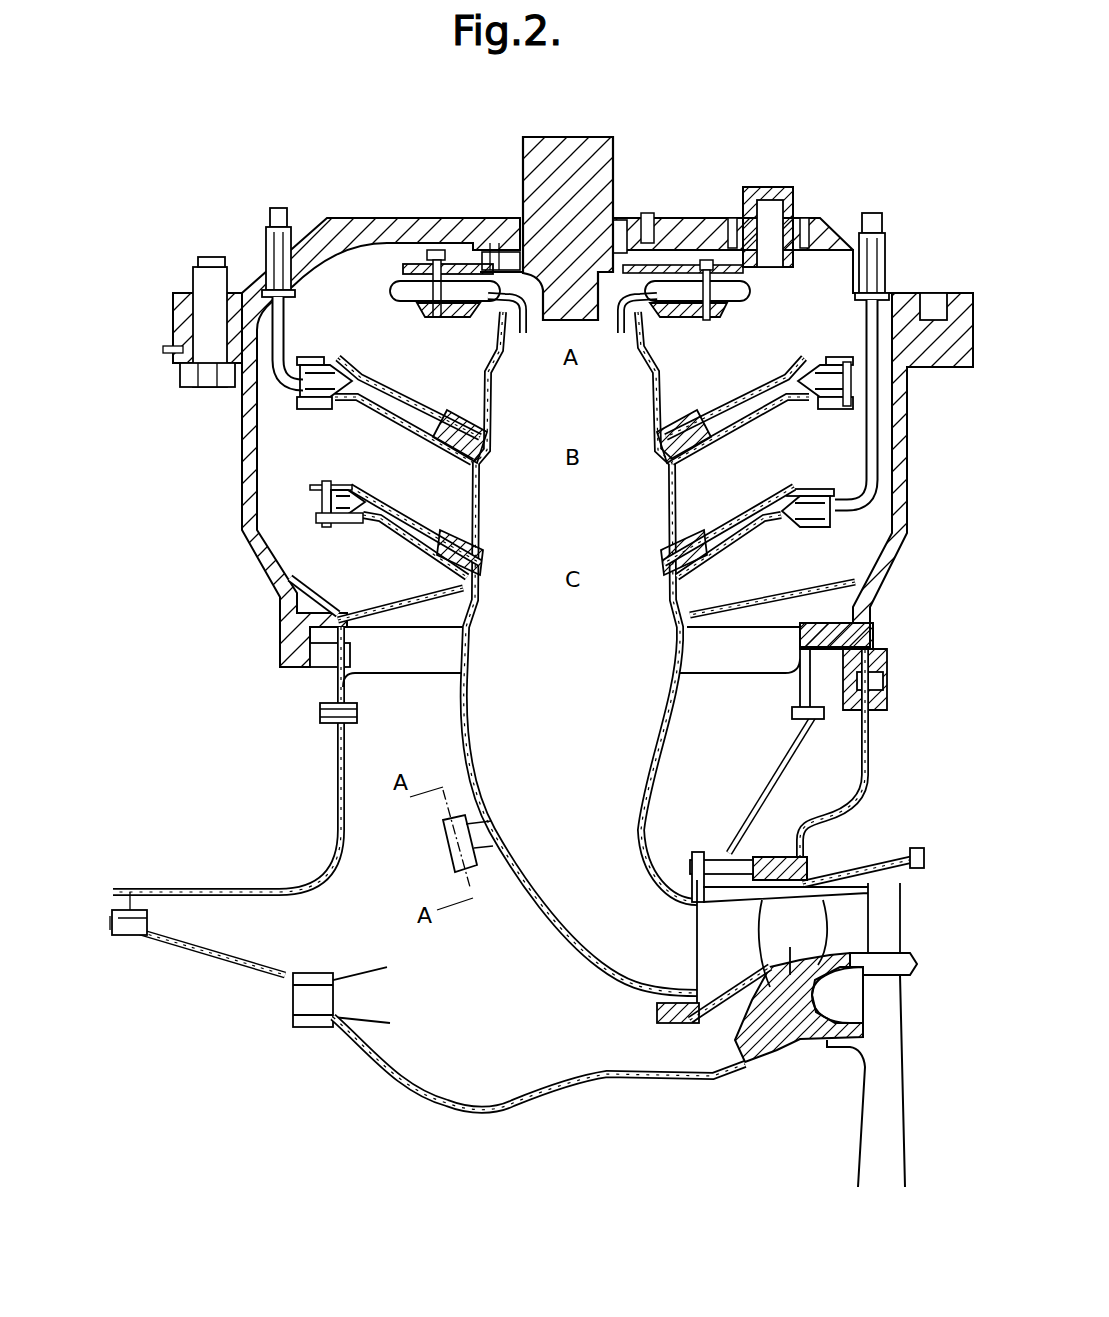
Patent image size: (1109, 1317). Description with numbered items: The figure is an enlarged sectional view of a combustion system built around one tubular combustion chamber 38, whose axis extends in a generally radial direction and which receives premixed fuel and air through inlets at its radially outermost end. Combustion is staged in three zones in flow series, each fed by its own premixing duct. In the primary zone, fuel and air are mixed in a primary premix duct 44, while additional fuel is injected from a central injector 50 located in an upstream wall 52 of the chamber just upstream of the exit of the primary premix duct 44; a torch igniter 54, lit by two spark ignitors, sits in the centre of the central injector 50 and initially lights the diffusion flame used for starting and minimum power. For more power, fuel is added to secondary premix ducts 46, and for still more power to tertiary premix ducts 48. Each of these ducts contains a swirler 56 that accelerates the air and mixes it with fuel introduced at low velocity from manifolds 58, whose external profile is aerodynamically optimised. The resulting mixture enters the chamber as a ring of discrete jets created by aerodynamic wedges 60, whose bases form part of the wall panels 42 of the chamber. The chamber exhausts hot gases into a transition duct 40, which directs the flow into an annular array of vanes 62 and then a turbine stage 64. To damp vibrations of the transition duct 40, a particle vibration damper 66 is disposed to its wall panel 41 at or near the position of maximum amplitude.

The tubular combustion chamber 38 is at (713, 373).
The transition duct 40 is at (523, 953).
The wall panel of the transition duct 41 is at (582, 988).
The wall panels 42 is at (665, 954).
The primary premix duct 44 is at (640, 310).
The secondary premix duct 46 is at (417, 402).
The tertiary premix duct 48 is at (400, 510).
The central injector 50 is at (580, 147).
The upstream wall 52 is at (383, 223).
The torch igniter 54 is at (584, 332).
The swirler 56 is at (310, 430).
The manifold 58 is at (318, 377).
The aerodynamic wedge 60 is at (483, 445).
The annular array of vanes 62 is at (773, 1000).
The turbine stage 64 is at (920, 933).
The particle vibration damper 66 is at (457, 850).